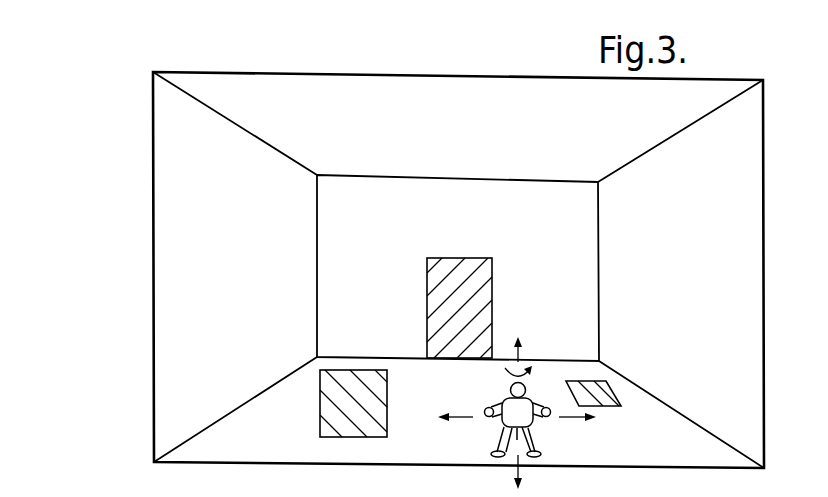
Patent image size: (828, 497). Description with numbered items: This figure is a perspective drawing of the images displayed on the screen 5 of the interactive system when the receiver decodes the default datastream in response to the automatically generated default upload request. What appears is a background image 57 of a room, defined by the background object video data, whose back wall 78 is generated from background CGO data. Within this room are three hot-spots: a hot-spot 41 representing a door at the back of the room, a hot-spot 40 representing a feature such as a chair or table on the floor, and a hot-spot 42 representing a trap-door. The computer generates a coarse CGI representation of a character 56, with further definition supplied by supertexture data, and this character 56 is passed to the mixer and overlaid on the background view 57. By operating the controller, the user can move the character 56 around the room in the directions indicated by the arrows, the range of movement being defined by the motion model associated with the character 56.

The screen 5 is at (269, 71).
The back wall 78 is at (452, 190).
The background image 57 is at (174, 264).
The hot-spot 41 is at (427, 292).
The hot-spot 40 is at (320, 400).
The hot-spot 42 is at (584, 380).
The character 56 is at (536, 441).